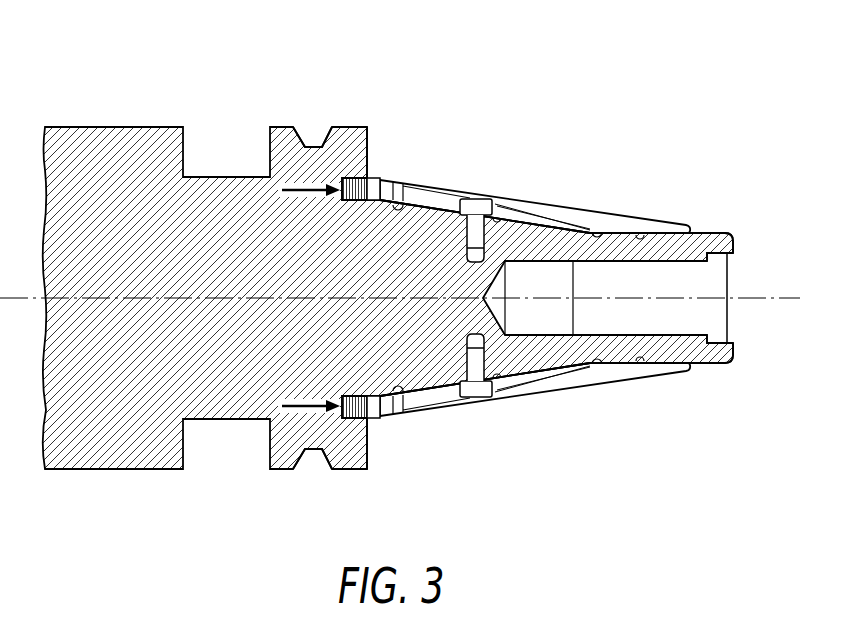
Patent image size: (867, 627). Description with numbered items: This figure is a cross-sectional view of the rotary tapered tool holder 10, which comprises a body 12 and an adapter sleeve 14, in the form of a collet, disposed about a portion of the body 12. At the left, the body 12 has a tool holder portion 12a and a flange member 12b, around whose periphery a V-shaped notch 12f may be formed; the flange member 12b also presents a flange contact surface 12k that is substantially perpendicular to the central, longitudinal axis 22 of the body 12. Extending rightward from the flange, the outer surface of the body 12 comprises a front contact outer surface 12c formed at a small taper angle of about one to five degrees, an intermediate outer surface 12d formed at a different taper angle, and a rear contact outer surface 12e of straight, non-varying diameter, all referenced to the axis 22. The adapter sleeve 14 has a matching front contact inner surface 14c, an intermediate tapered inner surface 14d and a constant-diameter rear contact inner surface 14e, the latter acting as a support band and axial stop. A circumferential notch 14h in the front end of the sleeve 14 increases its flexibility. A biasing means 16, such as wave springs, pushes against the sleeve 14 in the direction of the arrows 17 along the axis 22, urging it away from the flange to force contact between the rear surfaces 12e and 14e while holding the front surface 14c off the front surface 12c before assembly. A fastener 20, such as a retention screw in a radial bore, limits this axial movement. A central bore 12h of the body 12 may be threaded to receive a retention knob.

The rotary tapered tool holder 10 is at (784, 122).
The body 12 is at (196, 78).
The tool holder portion 12a is at (223, 177).
The flange member 12b is at (343, 127).
The front contact outer surface 12c is at (400, 203).
The intermediate outer surface 12d is at (557, 221).
The rear contact outer surface 12e is at (700, 233).
The V-shaped notch 12f is at (312, 145).
The central bore 12h is at (693, 288).
The flange contact surface 12k is at (367, 150).
The adapter sleeve 14 is at (586, 156).
The front contact inner surface 14c is at (408, 203).
The intermediate tapered inner surface 14d is at (498, 206).
The rear contact inner surface 14e is at (640, 235).
The circumferential notch 14h is at (388, 198).
The biasing means 16 is at (346, 180).
The arrows 17 is at (293, 194).
The fastener 20 is at (483, 198).
The central longitudinal axis 22 is at (768, 302).